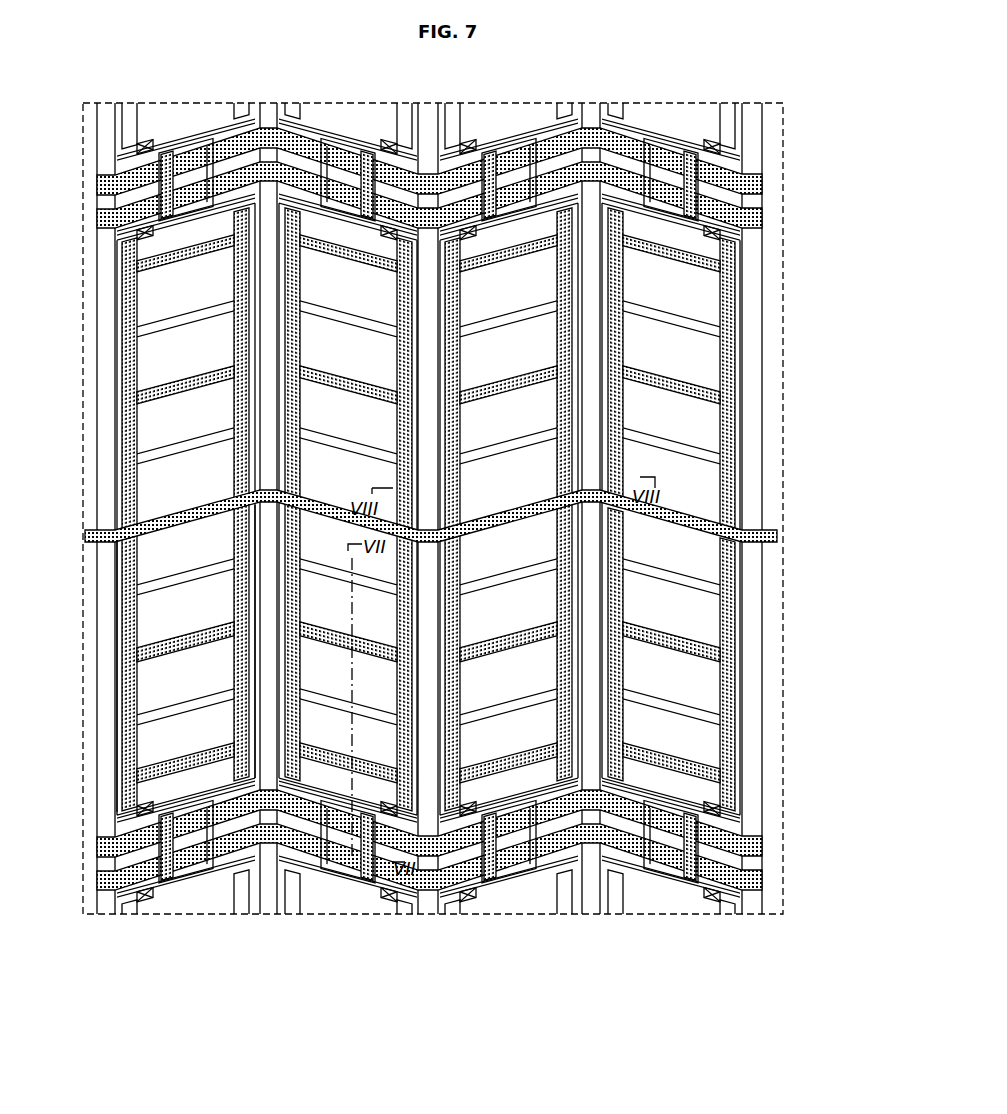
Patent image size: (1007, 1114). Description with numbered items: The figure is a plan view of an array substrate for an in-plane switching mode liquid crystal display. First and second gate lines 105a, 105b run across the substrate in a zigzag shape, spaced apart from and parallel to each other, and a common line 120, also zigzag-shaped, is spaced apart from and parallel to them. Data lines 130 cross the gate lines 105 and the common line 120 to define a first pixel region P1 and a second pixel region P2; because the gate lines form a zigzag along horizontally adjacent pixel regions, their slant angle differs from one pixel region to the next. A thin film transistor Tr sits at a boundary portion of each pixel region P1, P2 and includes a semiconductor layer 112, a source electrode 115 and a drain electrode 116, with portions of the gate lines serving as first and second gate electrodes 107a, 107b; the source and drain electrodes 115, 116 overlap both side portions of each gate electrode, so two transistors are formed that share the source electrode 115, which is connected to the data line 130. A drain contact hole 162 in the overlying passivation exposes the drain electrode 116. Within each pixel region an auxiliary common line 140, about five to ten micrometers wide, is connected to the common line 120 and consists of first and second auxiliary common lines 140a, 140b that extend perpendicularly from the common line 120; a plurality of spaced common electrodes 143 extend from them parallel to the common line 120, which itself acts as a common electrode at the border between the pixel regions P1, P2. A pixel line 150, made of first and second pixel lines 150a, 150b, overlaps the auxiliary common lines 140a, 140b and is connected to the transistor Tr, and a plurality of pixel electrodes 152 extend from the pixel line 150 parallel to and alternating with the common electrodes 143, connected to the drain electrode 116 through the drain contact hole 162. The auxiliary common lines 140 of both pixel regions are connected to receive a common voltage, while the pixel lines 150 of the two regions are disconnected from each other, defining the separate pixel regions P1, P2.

The gate lines 105 is at (497, 511).
The first gate line 105a is at (758, 187).
The second gate line 105b is at (758, 218).
The data line 130 is at (757, 300).
The auxiliary common line 140 is at (756, 369).
The first auxiliary common line 140a is at (655, 400).
The second auxiliary common line 140b is at (737, 373).
The common electrodes 143 is at (692, 452).
The common line 120 is at (778, 527).
The pixel line 150 is at (756, 659).
The first pixel line 150a is at (737, 565).
The second pixel line 150b is at (690, 603).
The pixel electrodes 152 is at (690, 706).
The first gate electrode 107a is at (660, 803).
The second gate electrode 107b is at (657, 797).
The semiconductor layer 112 is at (727, 897).
The source electrode 115 is at (698, 880).
The drain electrode 116 is at (640, 872).
The drain contact hole 162 is at (745, 892).
The thin film transistor Tr is at (672, 870).
The first pixel region P1 is at (125, 625).
The second pixel region P2 is at (125, 278).